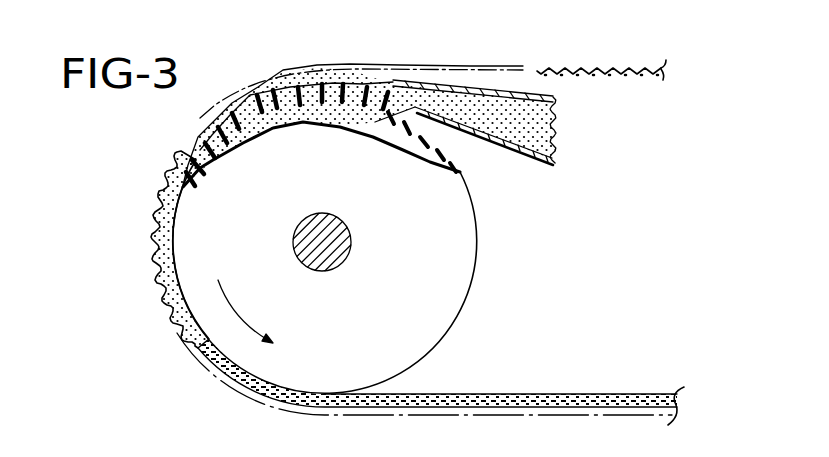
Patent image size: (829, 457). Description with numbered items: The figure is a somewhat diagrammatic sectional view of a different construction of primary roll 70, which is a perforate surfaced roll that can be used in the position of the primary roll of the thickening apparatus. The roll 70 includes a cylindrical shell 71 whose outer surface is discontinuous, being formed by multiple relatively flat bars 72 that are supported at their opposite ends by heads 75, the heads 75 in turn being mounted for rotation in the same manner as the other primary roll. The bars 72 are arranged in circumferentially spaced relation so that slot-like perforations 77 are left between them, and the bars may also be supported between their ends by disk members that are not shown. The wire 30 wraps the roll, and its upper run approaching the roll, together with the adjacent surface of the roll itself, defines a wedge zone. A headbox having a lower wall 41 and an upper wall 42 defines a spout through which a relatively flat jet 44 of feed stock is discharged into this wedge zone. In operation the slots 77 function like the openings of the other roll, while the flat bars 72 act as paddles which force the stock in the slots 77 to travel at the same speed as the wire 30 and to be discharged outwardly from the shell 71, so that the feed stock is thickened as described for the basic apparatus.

The wire 30 is at (620, 68).
The lower wall 41 is at (527, 165).
The upper wall 42 is at (474, 86).
The jet 44 is at (377, 86).
The primary roll 70 is at (164, 258).
The cylindrical shell 71 is at (190, 150).
The flat bars 72 is at (260, 103).
The heads 75 is at (455, 276).
The slot-like perforations 77 is at (420, 148).